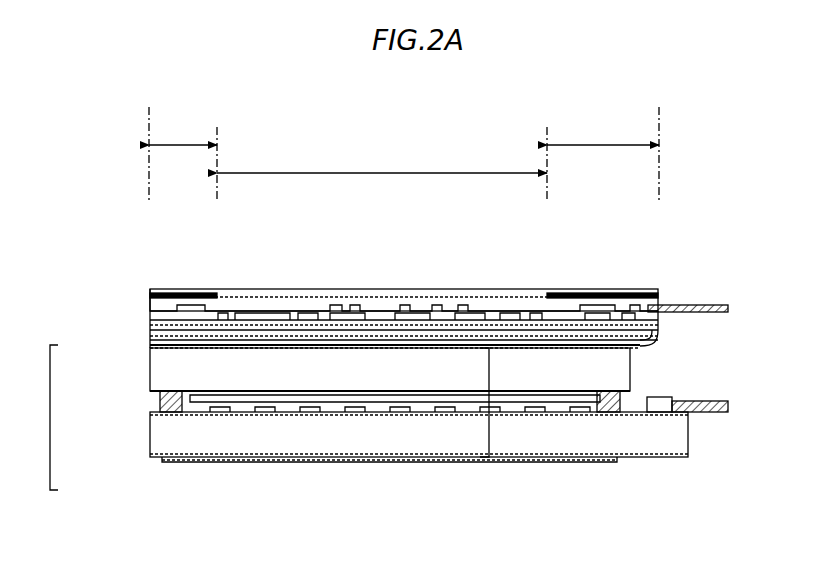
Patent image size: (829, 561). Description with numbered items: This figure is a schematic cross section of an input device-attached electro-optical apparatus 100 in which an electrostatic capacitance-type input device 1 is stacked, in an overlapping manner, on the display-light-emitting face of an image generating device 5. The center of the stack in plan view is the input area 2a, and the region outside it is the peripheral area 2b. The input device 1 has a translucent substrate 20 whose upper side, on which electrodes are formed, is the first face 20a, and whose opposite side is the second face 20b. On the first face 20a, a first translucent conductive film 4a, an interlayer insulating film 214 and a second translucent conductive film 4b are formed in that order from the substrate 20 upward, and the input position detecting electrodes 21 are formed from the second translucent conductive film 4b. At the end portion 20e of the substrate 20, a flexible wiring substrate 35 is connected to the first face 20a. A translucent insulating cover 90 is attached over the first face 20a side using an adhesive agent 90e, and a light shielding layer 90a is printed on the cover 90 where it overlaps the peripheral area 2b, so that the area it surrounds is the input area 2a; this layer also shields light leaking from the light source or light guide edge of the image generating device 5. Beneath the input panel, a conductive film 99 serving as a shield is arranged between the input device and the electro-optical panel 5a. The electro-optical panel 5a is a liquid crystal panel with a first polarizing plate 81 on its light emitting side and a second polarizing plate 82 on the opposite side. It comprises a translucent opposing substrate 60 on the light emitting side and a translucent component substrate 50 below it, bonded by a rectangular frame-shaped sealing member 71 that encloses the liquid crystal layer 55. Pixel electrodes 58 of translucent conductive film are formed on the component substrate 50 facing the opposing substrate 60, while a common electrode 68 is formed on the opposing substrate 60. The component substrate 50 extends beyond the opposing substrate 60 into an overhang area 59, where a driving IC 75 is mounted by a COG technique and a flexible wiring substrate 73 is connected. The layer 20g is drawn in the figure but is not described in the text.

The electrostatic capacitance-type input device 1 is at (760, 245).
The input device-attached electro-optical apparatus 100 is at (108, 226).
The input area 2a is at (382, 160).
The peripheral area 2b is at (404, 153).
The cover 90 is at (229, 289).
The light shielding layer 90a is at (215, 292).
The adhesive agent 90e is at (259, 300).
The substrate 20 is at (551, 330).
The first face 20a is at (494, 311).
The second face 20b is at (532, 328).
The end portion 20e is at (660, 312).
The liquid crystal layer 20g is at (150, 333).
The first translucent conductive film 4a is at (318, 320).
The second translucent conductive film 4b is at (399, 311).
The interlayer insulating film 214 is at (365, 311).
The input position detecting electrodes 21 is at (420, 320).
The flexible wiring substrate 35 is at (712, 305).
The first polarizing plate 81 is at (150, 345).
The opposing substrate 60 is at (150, 372).
The image generating device 5 is at (43, 417).
The component substrate 50 is at (150, 430).
The second polarizing plate 82 is at (160, 460).
The sealing member 71 is at (613, 396).
The liquid crystal layer 55 is at (340, 412).
The pixel electrodes 58 is at (262, 412).
The common electrode 68 is at (303, 402).
The electro-optical panel 5a is at (492, 380).
The conductive film 99 is at (588, 338).
The overhang area 59 is at (640, 400).
The driving IC 75 is at (663, 400).
The flexible wiring substrate 73 is at (705, 404).